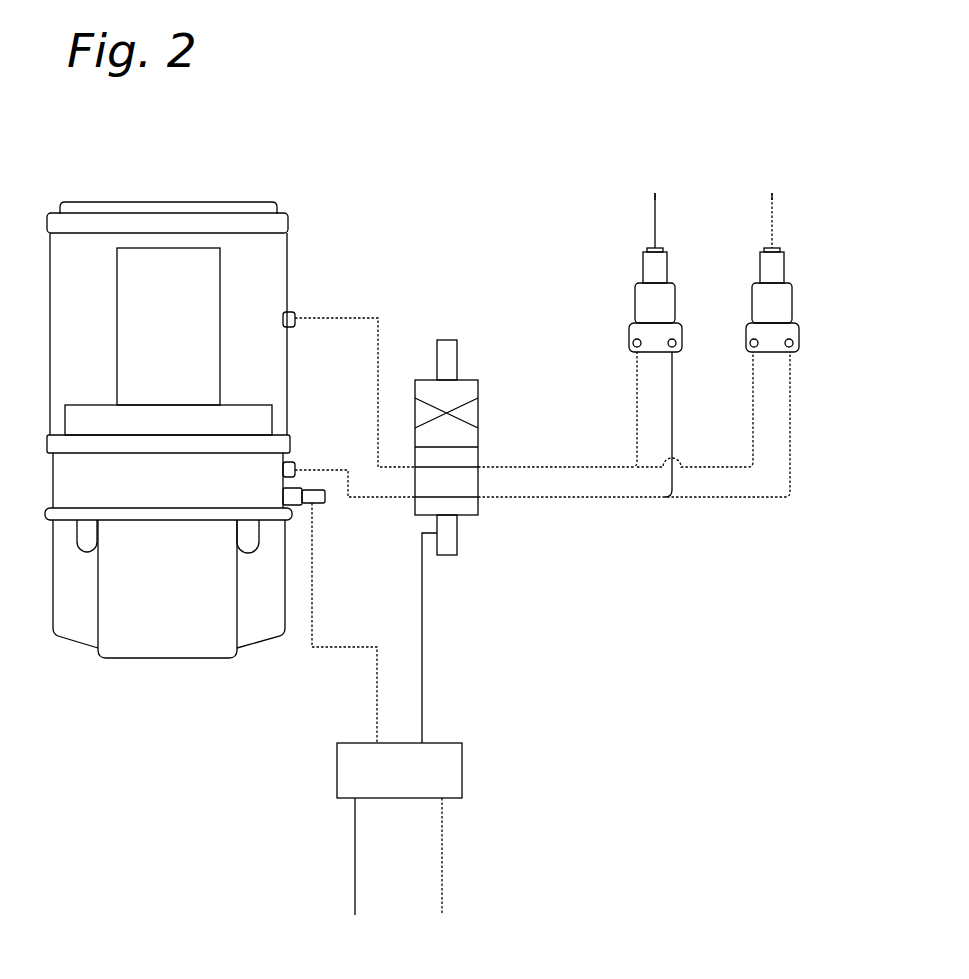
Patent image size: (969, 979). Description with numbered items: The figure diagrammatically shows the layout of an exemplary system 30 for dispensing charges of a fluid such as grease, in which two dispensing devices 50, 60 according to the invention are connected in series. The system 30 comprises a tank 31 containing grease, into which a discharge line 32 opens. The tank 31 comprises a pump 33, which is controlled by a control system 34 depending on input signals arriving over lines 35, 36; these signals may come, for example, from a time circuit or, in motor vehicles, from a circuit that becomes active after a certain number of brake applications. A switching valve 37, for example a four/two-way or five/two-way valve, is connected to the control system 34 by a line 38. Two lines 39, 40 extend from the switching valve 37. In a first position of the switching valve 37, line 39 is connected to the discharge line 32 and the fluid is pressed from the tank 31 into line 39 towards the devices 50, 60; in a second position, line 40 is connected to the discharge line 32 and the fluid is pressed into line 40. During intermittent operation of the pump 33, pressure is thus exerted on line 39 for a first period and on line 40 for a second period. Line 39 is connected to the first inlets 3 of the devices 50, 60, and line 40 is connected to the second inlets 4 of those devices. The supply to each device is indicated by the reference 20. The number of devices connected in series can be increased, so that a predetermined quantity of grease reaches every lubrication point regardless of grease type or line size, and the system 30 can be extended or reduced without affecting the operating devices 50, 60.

The first inlet 3 is at (630, 346).
The second inlet 4 is at (676, 346).
The supply line 20 is at (653, 222).
The system 30 is at (459, 255).
The tank 31 is at (72, 287).
The discharge line 32 is at (330, 318).
The pump 33 is at (75, 618).
The control system 34 is at (440, 780).
The line 35 is at (355, 867).
The line 36 is at (442, 855).
The switching valve 37 is at (457, 385).
The line 38 is at (421, 650).
The line 39 is at (545, 467).
The line 40 is at (556, 497).
The device 50 is at (624, 289).
The device 60 is at (810, 306).